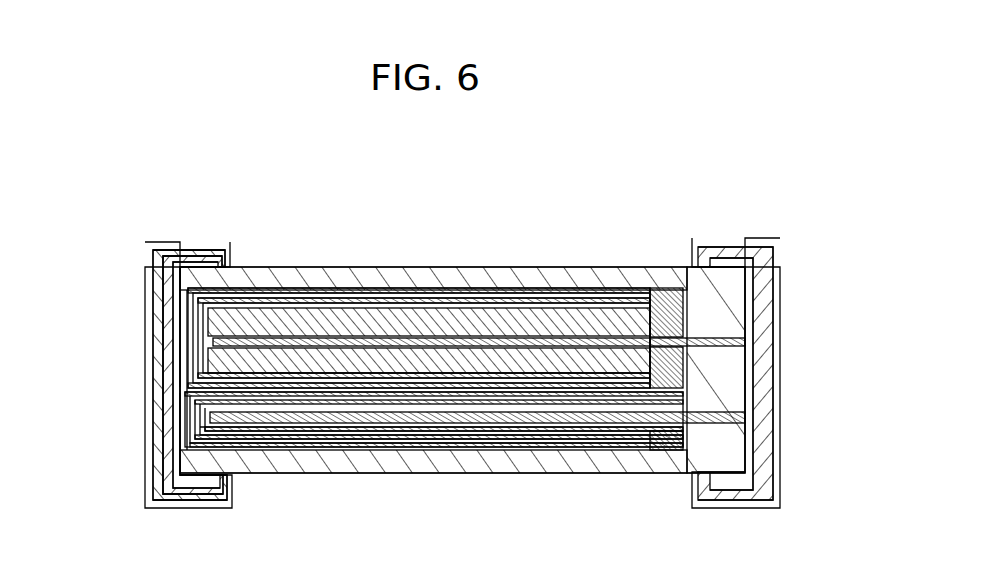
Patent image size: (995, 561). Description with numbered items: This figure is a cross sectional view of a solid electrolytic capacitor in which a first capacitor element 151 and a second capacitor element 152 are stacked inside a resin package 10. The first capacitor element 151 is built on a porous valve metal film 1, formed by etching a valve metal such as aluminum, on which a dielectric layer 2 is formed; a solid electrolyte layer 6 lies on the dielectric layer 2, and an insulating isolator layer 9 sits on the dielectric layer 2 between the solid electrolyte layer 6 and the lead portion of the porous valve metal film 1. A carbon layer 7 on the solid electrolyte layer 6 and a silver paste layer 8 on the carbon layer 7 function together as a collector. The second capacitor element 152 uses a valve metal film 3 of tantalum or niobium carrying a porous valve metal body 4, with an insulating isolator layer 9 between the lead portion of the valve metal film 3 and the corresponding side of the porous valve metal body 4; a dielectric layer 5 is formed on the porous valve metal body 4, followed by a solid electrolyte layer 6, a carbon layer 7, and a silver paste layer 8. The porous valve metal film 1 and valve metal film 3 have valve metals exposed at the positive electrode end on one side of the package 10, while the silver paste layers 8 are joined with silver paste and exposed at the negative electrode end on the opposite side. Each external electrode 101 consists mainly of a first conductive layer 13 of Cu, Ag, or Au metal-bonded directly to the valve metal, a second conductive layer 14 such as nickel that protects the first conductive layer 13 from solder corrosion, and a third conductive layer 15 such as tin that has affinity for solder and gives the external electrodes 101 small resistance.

The porous valve metal film 1 is at (325, 425).
The dielectric layer 2 is at (412, 433).
The valve metal film 3 is at (290, 343).
The porous valve metal body 4 is at (344, 318).
The dielectric layer 5 is at (398, 305).
The solid electrolyte layer 6 is at (485, 300).
The carbon layer 7 is at (546, 295).
The silver paste layer 8 is at (594, 290).
The insulating isolator layer 9 is at (670, 300).
The package 10 is at (540, 468).
The first conductive layer 13 is at (195, 478).
The second conductive layer 14 is at (160, 440).
The third conductive layer 15 is at (150, 302).
The external electrode 101 is at (457, 394).
The first capacitor element 151 is at (141, 460).
The second capacitor element 152 is at (139, 292).